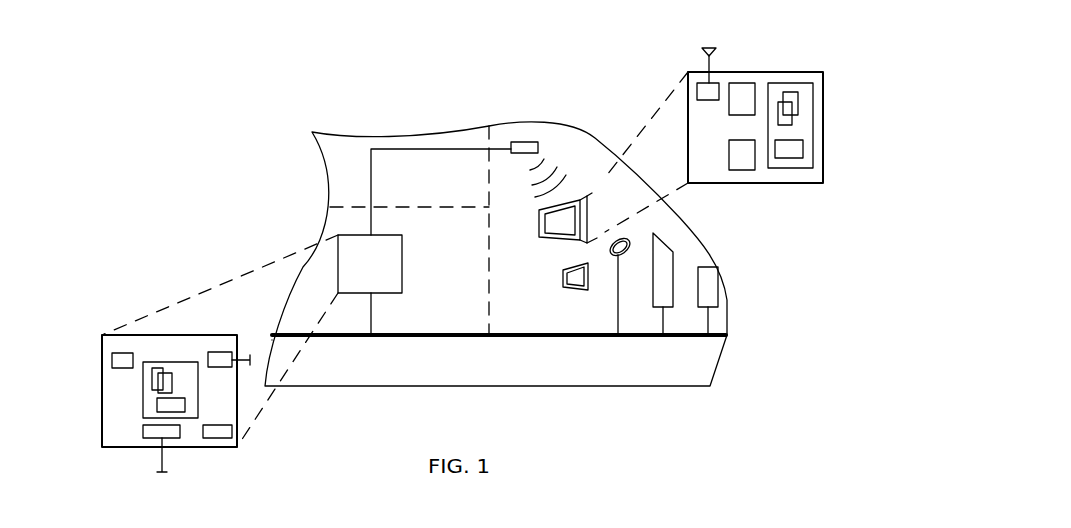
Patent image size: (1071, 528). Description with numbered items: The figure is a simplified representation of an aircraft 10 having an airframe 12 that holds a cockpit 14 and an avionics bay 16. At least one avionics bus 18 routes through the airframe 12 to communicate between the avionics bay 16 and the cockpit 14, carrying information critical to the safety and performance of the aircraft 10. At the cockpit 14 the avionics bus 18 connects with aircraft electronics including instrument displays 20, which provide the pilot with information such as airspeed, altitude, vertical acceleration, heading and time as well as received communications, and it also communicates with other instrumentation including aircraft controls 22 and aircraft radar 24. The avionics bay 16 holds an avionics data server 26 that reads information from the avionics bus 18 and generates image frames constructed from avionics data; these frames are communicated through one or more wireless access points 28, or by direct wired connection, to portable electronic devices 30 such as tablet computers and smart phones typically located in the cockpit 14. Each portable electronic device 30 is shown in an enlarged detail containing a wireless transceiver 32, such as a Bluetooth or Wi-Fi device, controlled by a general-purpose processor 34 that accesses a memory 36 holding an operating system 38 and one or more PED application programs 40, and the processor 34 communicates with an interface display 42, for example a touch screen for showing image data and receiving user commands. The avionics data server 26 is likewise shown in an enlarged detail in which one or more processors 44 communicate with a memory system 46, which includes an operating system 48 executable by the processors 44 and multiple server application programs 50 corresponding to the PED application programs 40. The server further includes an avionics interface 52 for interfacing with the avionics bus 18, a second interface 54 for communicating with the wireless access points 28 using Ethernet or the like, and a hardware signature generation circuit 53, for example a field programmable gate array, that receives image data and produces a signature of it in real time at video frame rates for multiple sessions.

The aircraft 10 is at (418, 84).
The airframe 12 is at (557, 386).
The cockpit 14 is at (597, 172).
The avionics bay 16 is at (467, 343).
The avionics bus 18 is at (440, 333).
The instrument displays 20 is at (617, 260).
The aircraft controls 22 is at (653, 293).
The aircraft radar 24 is at (698, 293).
The avionics data server 26 is at (91, 327).
The wireless access points 28 is at (540, 147).
The portable electronic devices 30 is at (560, 242).
The wireless transceiver 32 is at (708, 100).
The processor 34 is at (747, 83).
The memory 36 is at (823, 122).
The operating system 38 is at (797, 158).
The PED application programs 40 is at (779, 103).
The interface display 42 is at (746, 170).
The processors 44 is at (112, 362).
The memory system 46 is at (157, 362).
The operating system 48 is at (157, 406).
The server application programs 50 is at (152, 382).
The avionics interface 52 is at (143, 434).
The hardware signature generation circuit 53 is at (212, 440).
The second interface 54 is at (219, 352).